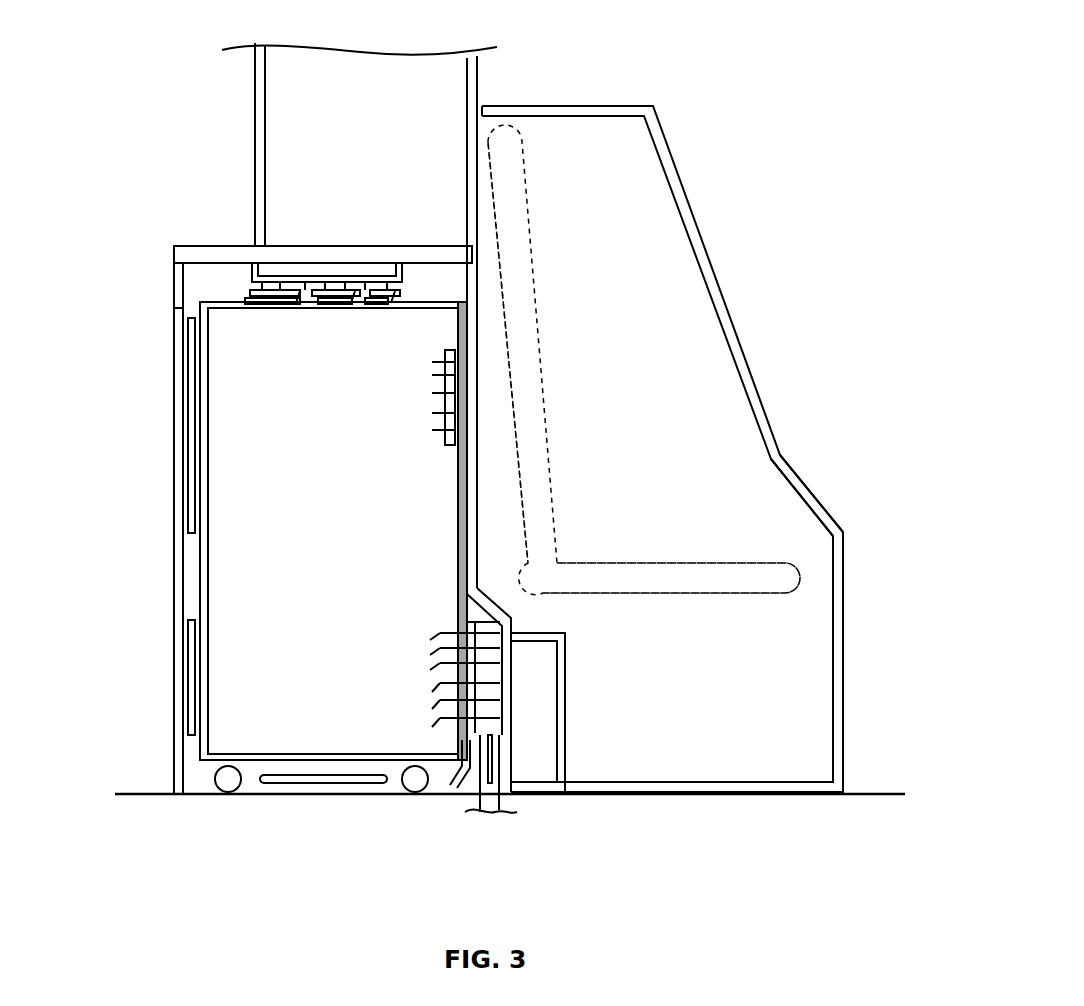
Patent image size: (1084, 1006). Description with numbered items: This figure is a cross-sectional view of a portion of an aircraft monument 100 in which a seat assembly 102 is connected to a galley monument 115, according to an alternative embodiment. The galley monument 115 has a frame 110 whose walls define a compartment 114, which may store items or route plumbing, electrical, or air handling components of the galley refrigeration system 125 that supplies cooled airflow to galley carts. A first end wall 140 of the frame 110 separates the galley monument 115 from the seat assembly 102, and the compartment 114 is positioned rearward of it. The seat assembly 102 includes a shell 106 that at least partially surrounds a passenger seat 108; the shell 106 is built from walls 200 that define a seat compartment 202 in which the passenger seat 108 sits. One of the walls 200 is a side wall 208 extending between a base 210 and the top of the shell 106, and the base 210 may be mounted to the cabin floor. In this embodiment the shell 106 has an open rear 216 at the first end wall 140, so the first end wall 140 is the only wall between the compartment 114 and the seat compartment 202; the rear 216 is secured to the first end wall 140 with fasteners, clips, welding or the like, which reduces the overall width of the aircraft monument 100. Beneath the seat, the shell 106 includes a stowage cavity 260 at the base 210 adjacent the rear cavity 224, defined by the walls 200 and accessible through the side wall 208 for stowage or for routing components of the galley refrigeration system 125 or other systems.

The aircraft monument 100 is at (845, 115).
The seat assembly 102 is at (775, 370).
The shell 106 is at (808, 483).
The passenger seat 108 is at (735, 563).
The frame 110 is at (478, 75).
The compartment 114 is at (213, 287).
The galley monument 115 is at (152, 157).
The galley refrigeration system 125 is at (470, 808).
The first end wall 140 is at (478, 493).
The walls 200 is at (705, 272).
The seat compartment 202 is at (660, 260).
The side wall 208 is at (628, 168).
The base 210 is at (692, 795).
The rear 216 is at (487, 165).
The rear cavity 224 is at (465, 762).
The stowage cavity 260 is at (518, 762).